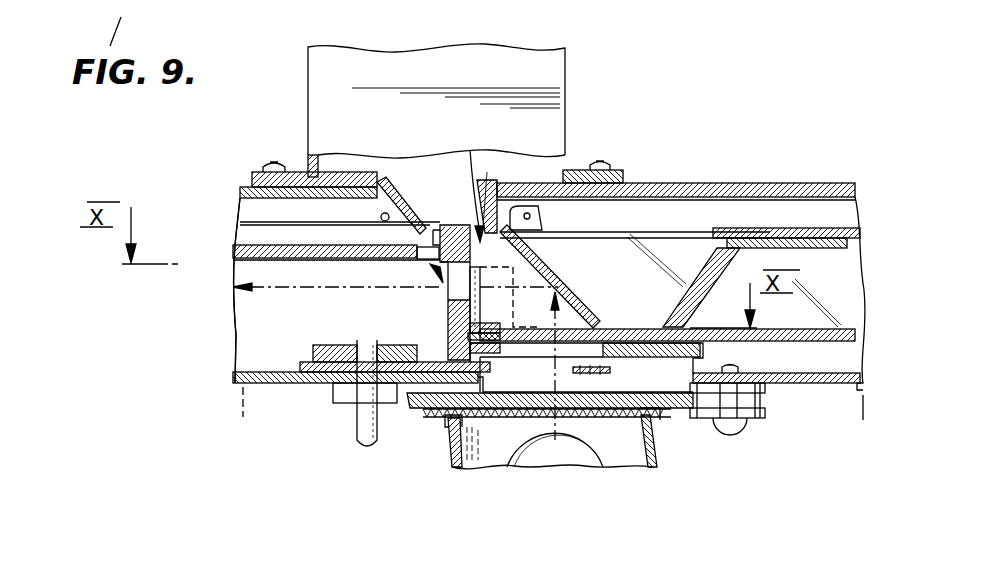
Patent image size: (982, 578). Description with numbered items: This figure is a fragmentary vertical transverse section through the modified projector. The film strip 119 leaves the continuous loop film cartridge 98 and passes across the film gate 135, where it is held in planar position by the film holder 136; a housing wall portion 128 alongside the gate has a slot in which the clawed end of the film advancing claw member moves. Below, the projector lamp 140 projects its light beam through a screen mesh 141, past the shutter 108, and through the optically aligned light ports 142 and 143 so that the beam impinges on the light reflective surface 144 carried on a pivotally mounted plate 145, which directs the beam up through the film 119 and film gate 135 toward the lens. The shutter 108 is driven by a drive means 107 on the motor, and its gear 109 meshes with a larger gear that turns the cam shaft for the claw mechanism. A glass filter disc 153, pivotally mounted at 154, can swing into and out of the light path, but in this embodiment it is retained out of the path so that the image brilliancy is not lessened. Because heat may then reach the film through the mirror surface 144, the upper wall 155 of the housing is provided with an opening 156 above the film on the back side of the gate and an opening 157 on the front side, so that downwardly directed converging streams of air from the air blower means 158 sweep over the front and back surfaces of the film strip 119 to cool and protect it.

The air blower means 158 is at (437, 55).
The opening 156 is at (476, 182).
The opening 157 is at (440, 222).
The upper wall 155 is at (770, 185).
The film cartridge 98 is at (819, 240).
The pivotally mounted plate 145 is at (553, 270).
The light reflective surface 144 is at (567, 312).
The light port 143 is at (602, 328).
The film holder 136 is at (478, 282).
The film strip 119 is at (450, 288).
The film gate 135 is at (447, 296).
The housing wall portion 128 is at (450, 327).
The gear 109 is at (325, 343).
The shutter 108 is at (320, 385).
The drive means 107 is at (355, 436).
The screen mesh 141 is at (438, 410).
The light port 142 is at (603, 352).
The glass filter disc 153 is at (653, 418).
The projector lamp 140 is at (660, 459).
The pivot mounting 154 is at (758, 420).